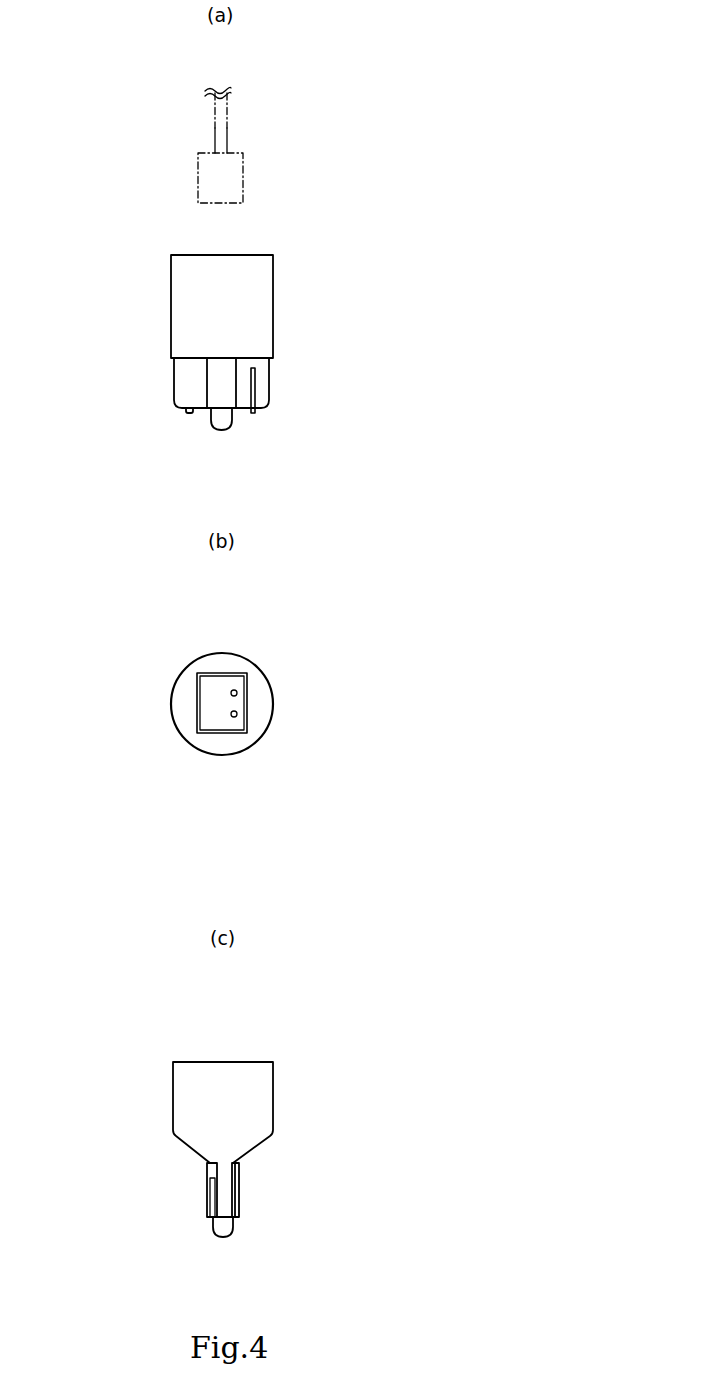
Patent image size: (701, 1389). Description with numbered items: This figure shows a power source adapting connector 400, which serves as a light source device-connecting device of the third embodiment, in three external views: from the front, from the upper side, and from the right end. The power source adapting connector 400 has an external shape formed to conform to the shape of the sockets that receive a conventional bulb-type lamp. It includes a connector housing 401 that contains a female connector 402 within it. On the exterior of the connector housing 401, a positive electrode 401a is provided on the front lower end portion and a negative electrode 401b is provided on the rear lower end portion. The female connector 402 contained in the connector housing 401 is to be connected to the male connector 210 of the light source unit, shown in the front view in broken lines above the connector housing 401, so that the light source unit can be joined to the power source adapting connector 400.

The male connector 210 is at (243, 170).
The power source adapting connector 400 is at (316, 217).
The connector housing 401 is at (265, 310).
The positive electrode 401a is at (187, 417).
The negative electrode 401b is at (255, 417).
The female connector 402 is at (190, 704).